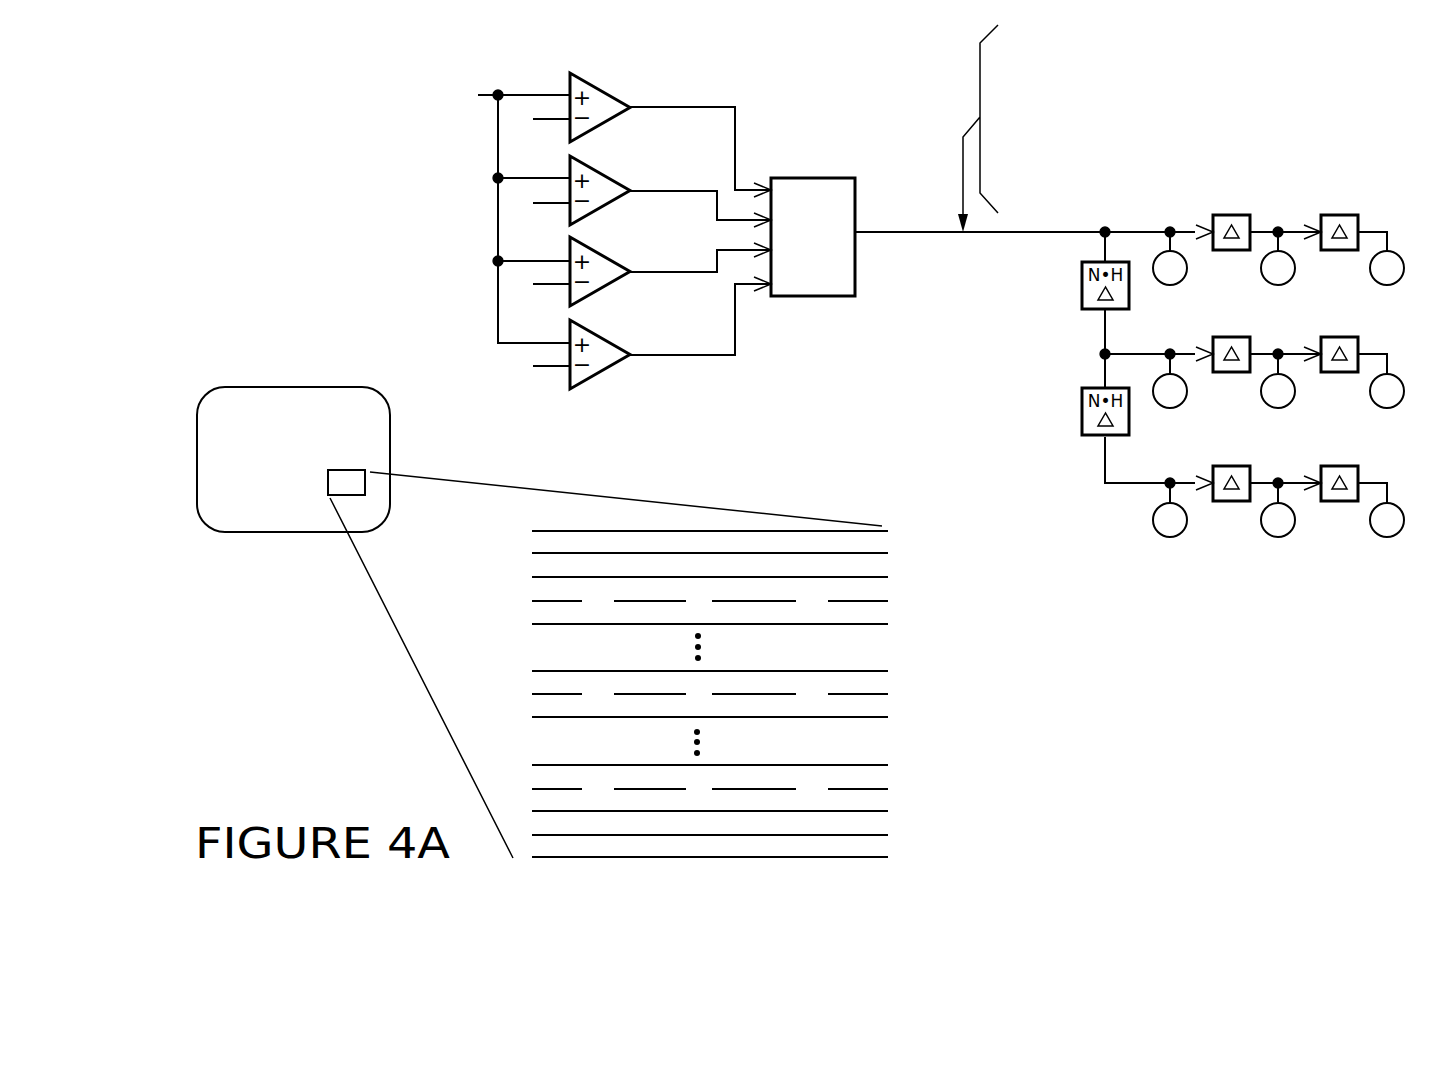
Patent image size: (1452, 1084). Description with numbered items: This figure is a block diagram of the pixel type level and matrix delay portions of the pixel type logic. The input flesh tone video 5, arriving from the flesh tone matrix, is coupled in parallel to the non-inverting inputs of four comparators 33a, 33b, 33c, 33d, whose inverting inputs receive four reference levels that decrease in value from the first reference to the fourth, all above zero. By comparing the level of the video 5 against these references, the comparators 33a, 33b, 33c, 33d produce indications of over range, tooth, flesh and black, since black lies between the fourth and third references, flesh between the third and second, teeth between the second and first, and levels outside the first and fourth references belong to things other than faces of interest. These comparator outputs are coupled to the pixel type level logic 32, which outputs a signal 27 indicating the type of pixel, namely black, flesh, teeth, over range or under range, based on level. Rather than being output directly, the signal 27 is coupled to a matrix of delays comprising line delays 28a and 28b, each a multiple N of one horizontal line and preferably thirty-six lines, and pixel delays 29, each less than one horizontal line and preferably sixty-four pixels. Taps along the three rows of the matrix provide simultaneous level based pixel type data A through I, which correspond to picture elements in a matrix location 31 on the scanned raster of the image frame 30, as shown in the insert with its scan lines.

The flesh tone video 5 is at (520, 93).
The comparator 33a is at (610, 92).
The comparator 33b is at (610, 175).
The comparator 33c is at (610, 257).
The comparator 33d is at (610, 339).
The pixel type level logic 32 is at (805, 175).
The pixel type signal 27 is at (965, 238).
The N horizontal line delay 28a is at (1082, 313).
The N horizontal line delay 28b is at (1080, 437).
The pixel delay 29 is at (1333, 212).
The image frame 30 is at (392, 430).
The matrix location 31 is at (325, 470).